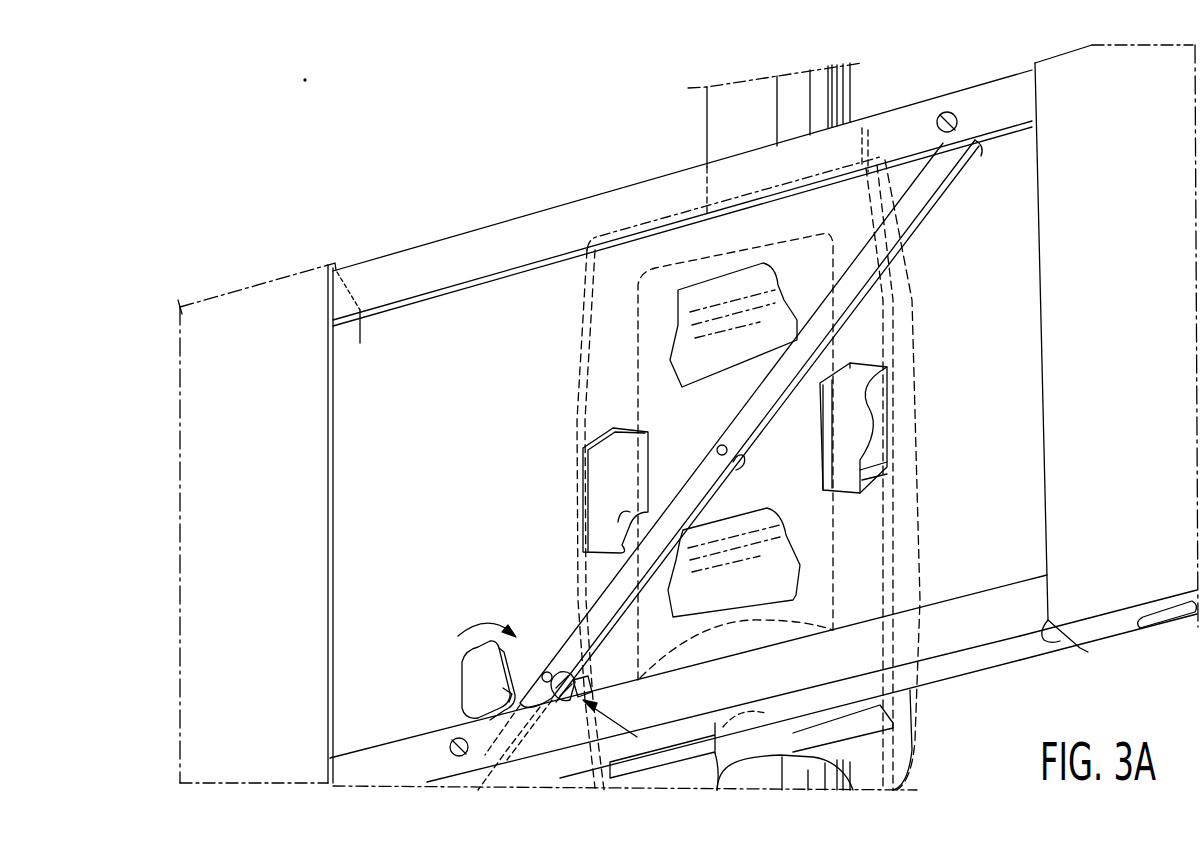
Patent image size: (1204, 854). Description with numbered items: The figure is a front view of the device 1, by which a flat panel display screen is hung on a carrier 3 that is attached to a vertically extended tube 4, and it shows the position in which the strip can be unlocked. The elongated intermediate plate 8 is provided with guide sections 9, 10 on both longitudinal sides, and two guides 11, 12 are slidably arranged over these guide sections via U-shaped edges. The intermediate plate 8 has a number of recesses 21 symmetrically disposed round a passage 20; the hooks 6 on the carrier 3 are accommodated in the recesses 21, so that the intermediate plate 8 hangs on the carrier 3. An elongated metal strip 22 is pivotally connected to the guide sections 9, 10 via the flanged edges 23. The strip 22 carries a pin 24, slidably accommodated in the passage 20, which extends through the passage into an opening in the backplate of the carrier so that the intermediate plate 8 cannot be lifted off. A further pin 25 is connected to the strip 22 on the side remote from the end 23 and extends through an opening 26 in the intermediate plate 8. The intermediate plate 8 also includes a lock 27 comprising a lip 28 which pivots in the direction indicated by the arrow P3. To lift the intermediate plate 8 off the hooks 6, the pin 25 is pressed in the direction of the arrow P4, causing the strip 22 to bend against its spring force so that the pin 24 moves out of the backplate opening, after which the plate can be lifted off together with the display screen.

The device 1 is at (518, 150).
The carrier 3 is at (903, 712).
The tube 4 is at (722, 117).
The hooks 6 is at (777, 284).
The intermediate plate 8 is at (615, 173).
The guide section 9 is at (443, 256).
The guide section 10 is at (980, 610).
The guide 11 is at (277, 297).
The guide 12 is at (1105, 585).
The passage 20 is at (743, 458).
The recesses 21 is at (677, 346).
The strip 22 is at (920, 197).
The flanged edges 23 is at (976, 145).
The pin 24 is at (741, 468).
The pin 25 is at (583, 663).
The opening 26 is at (580, 683).
The lock 27 is at (440, 683).
The lip 28 is at (476, 668).
The arrow P3 is at (489, 624).
The arrow P4 is at (610, 711).